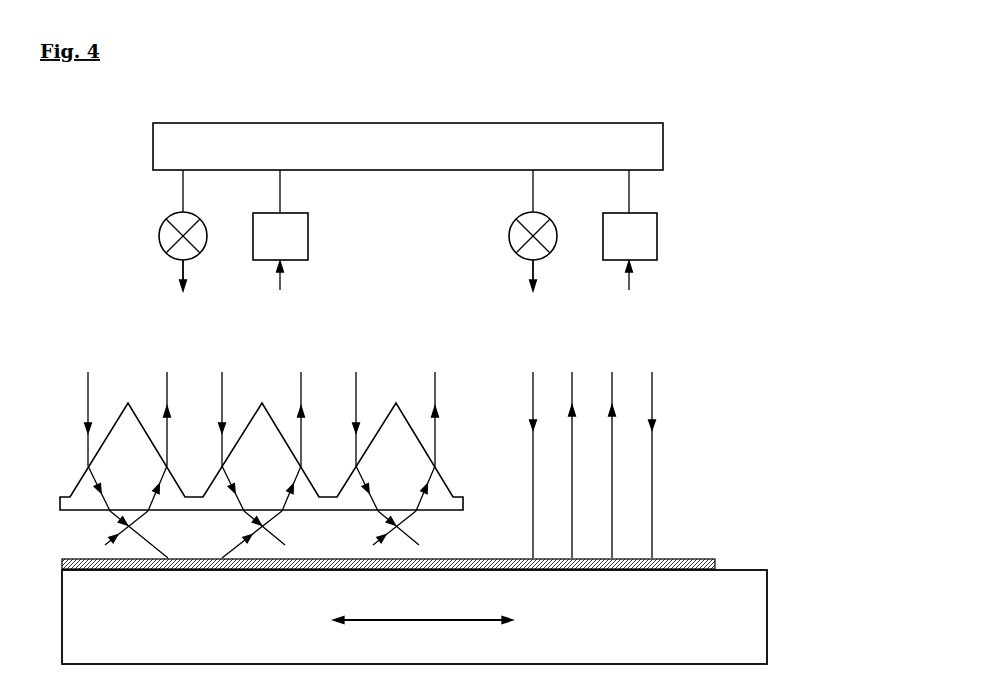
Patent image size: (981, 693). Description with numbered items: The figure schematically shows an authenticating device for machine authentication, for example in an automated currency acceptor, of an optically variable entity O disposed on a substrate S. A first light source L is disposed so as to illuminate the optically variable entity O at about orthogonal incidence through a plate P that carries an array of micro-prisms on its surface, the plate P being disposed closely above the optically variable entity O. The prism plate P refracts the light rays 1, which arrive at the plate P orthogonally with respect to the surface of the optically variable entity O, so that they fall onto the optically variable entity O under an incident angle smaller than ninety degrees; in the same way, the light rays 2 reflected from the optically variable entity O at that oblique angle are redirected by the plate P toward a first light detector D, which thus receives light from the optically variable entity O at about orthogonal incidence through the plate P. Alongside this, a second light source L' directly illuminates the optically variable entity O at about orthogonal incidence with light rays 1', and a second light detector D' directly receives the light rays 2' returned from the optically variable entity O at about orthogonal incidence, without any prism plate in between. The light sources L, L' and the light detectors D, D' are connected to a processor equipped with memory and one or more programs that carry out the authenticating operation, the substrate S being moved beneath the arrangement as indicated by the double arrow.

The first light source L is at (148, 230).
The first light detector D is at (280, 230).
The second light source L' is at (499, 230).
The second light detector D' is at (630, 230).
The prism plate P is at (385, 443).
The light rays 1 is at (250, 452).
The reflected light rays 2 is at (273, 452).
The second incident light beam 1' is at (592, 452).
The second reflected light beam 2' is at (592, 452).
The optically variable entity O is at (718, 562).
The substrate S is at (702, 637).